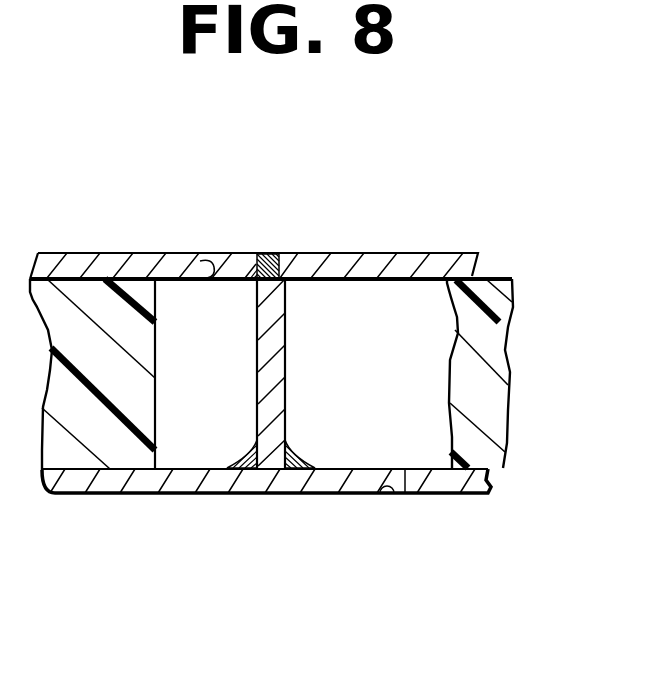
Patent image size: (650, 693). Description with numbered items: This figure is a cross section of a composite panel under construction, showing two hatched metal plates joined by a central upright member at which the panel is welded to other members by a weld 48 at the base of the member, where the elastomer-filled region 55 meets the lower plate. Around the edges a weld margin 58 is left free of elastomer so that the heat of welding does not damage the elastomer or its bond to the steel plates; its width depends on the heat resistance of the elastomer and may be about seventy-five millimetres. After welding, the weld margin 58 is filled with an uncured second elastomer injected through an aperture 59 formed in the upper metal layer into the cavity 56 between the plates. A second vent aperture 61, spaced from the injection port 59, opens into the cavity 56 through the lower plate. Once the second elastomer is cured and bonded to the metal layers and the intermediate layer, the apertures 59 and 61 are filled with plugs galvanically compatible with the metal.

The weld 48 is at (252, 457).
The support post 55 is at (269, 262).
The cavity 56 is at (437, 374).
The weld margin 58 is at (196, 440).
The aperture 59 is at (205, 262).
The vent aperture 61 is at (392, 500).